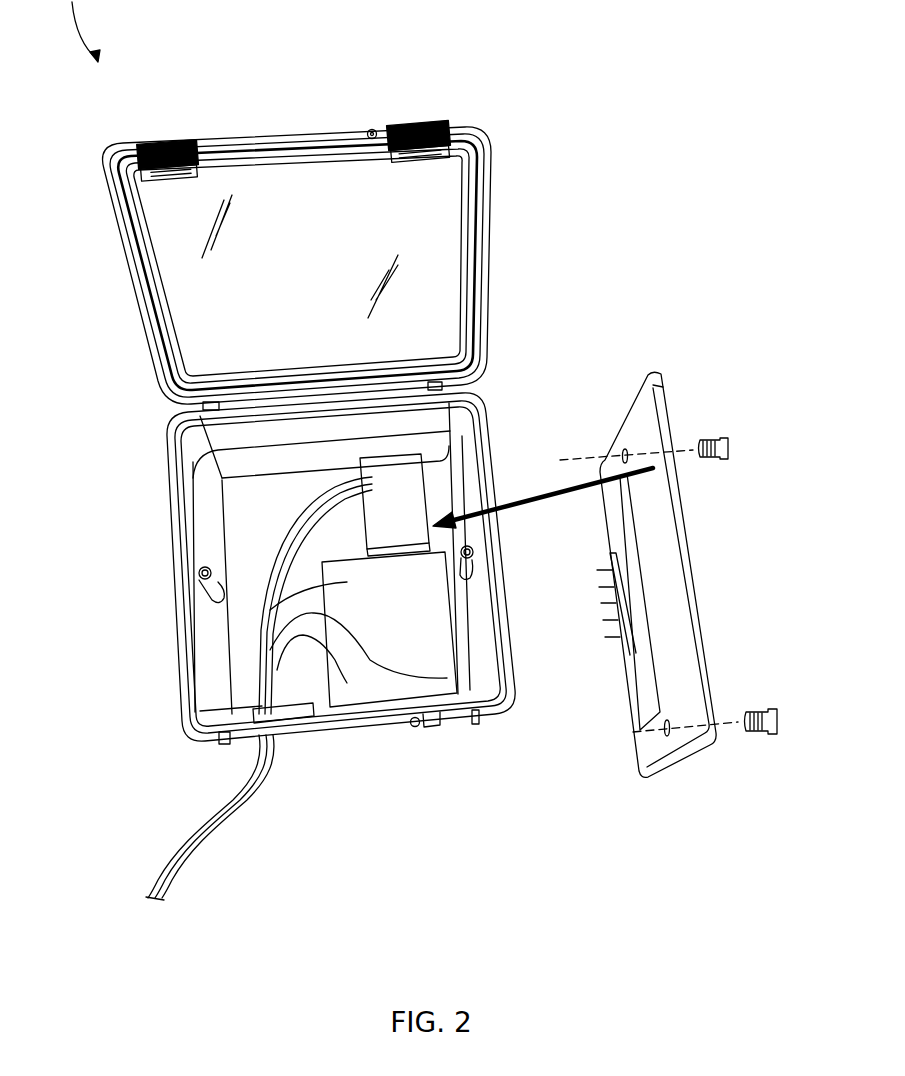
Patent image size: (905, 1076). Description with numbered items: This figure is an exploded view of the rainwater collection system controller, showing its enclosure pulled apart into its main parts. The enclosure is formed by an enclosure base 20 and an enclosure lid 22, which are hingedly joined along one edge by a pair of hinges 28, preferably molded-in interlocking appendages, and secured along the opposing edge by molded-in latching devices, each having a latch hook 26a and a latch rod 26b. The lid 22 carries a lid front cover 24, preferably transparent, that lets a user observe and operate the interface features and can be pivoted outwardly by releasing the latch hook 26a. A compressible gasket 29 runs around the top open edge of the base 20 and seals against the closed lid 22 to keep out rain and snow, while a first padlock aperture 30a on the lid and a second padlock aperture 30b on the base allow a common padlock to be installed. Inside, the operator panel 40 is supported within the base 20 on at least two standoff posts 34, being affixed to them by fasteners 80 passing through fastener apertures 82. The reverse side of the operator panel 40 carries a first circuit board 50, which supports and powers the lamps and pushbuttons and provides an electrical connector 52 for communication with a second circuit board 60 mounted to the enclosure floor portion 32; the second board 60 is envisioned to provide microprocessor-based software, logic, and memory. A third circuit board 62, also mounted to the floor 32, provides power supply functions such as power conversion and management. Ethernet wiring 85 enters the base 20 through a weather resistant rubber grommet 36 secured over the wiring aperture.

The enclosure base 20 is at (512, 662).
The enclosure lid 22 is at (262, 135).
The lid front cover 24 is at (446, 228).
The latch hook 26a is at (182, 142).
The latch rod 26b is at (222, 746).
The hinges 28 is at (437, 373).
The compressible gasket 29 is at (177, 700).
The first padlock aperture 30a is at (374, 129).
The second padlock aperture 30b is at (418, 727).
The enclosure floor portion 32 is at (249, 503).
The standoff posts 34 is at (215, 590).
The rubber grommet 36 is at (316, 724).
The operator panel 40 is at (648, 425).
The first circuit board 50 is at (643, 612).
The electrical connector 52 is at (625, 648).
The second circuit board 60 is at (438, 620).
The third circuit board 62 is at (400, 497).
The fasteners 80 is at (730, 442).
The fastener apertures 82 is at (624, 452).
The Ethernet wiring 85 is at (262, 688).